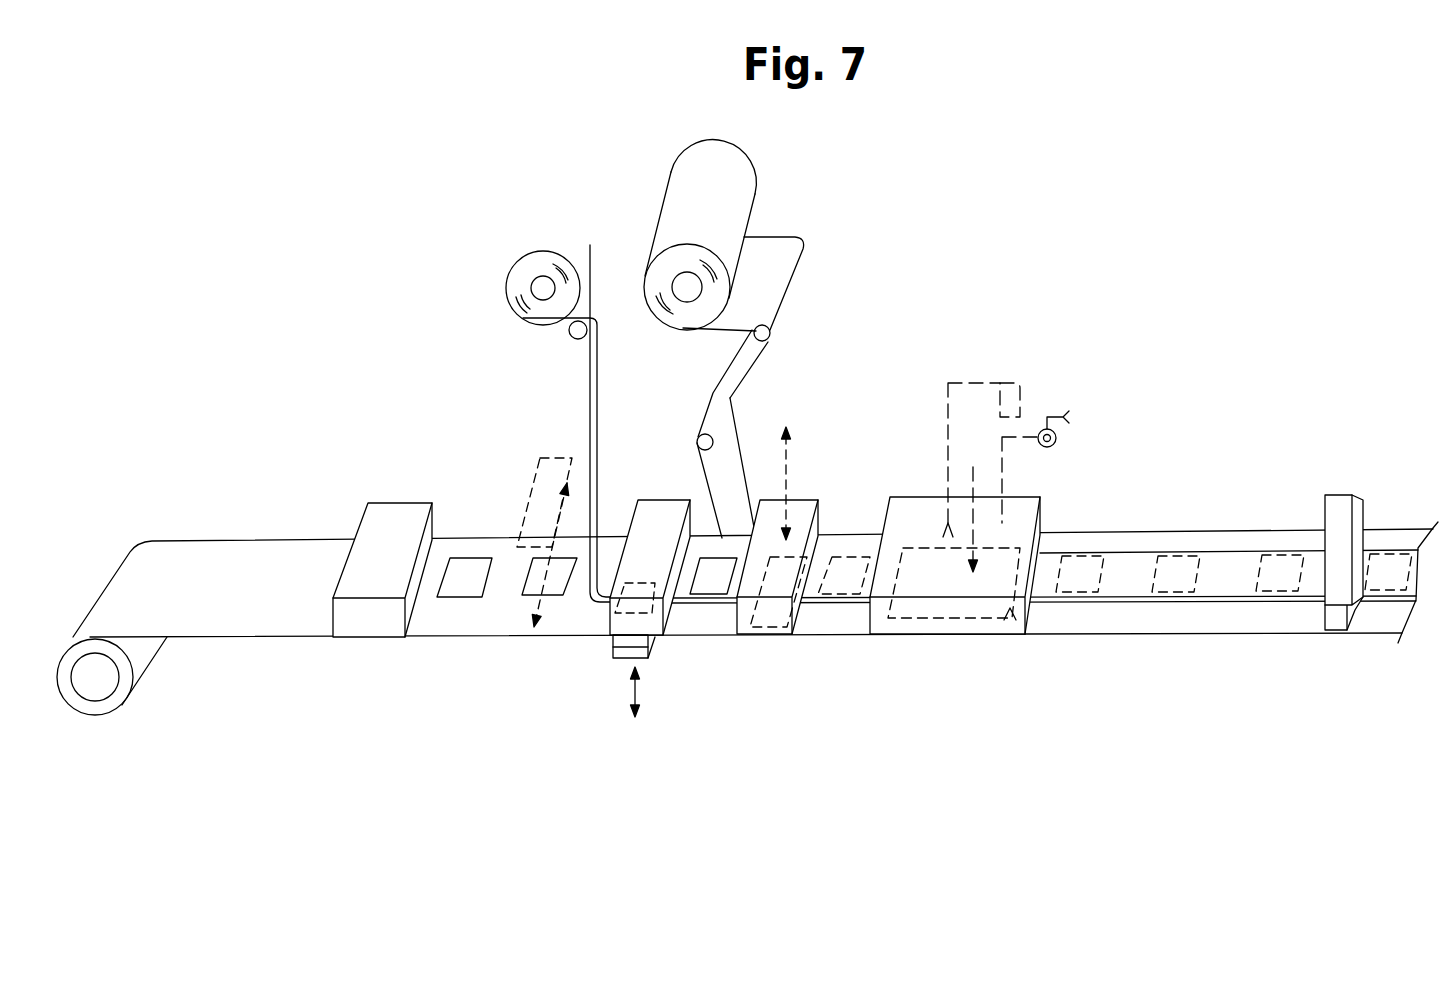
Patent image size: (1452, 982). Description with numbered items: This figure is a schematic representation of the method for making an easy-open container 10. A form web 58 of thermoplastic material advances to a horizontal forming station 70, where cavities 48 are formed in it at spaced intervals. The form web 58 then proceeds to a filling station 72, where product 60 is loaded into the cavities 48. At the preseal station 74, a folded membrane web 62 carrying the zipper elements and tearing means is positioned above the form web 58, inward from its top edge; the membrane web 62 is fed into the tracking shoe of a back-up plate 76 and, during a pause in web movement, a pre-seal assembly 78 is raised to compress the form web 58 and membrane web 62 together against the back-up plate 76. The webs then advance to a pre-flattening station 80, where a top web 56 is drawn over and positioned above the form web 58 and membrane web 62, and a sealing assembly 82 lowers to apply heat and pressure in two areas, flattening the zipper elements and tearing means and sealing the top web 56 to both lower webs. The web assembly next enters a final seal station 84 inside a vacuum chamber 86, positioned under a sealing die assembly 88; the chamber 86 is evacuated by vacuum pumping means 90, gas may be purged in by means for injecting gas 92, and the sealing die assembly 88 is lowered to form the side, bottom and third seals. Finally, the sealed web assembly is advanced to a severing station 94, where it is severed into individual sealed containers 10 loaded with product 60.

The easy-open container 10 is at (1388, 526).
The cavities 48 is at (479, 537).
The top web 56 is at (683, 192).
The form web 58 is at (283, 562).
The product 60 is at (552, 588).
The folded membrane web 62 is at (590, 245).
The horizontal forming station 70 is at (358, 650).
The filling station 72 is at (527, 648).
The preseal station 74 is at (656, 495).
The back-up plate 76 is at (650, 623).
The pre-seal assembly 78 is at (613, 650).
The pre-flattening station 80 is at (757, 648).
The sealing assembly 82 is at (786, 632).
The final seal station 84 is at (927, 649).
The vacuum chamber 86 is at (993, 627).
The sealing die assembly 88 is at (1020, 636).
The vacuum pumping means 90 is at (1057, 438).
The means for injecting gas 92 is at (1005, 383).
The severing station 94 is at (1332, 650).